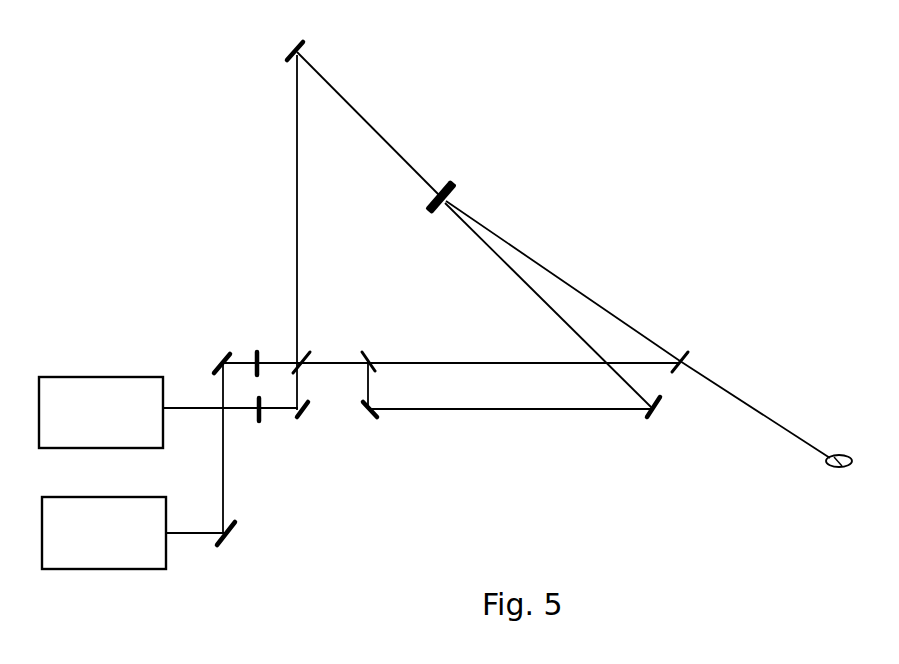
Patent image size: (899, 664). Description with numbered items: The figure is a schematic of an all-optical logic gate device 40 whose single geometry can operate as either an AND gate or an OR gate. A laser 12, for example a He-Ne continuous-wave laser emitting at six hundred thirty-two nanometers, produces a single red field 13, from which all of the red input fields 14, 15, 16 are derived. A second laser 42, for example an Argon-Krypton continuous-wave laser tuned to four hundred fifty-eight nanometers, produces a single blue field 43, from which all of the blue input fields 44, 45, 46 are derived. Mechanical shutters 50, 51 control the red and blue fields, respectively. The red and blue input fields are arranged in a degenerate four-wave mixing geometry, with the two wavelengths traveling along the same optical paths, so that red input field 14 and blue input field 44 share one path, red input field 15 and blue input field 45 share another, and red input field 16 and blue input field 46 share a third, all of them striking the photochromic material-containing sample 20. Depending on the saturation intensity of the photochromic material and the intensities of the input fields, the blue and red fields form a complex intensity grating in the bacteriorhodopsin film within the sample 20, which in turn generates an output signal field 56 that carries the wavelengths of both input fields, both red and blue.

The laser 12 is at (105, 377).
The single field 13 is at (185, 409).
The second laser 42 is at (115, 497).
The single field 43 is at (192, 535).
The mechanical shutter 50 is at (257, 324).
The mechanical shutter 51 is at (259, 423).
The device 40 is at (176, 230).
The red input field 15 is at (373, 124).
The blue input field 45 is at (373, 128).
The sample 20 is at (455, 185).
The red input field 16 is at (563, 281).
The blue input field 46 is at (548, 270).
The red input field 14 is at (548, 305).
The blue input field 44 is at (522, 280).
The output signal field 56 is at (733, 392).